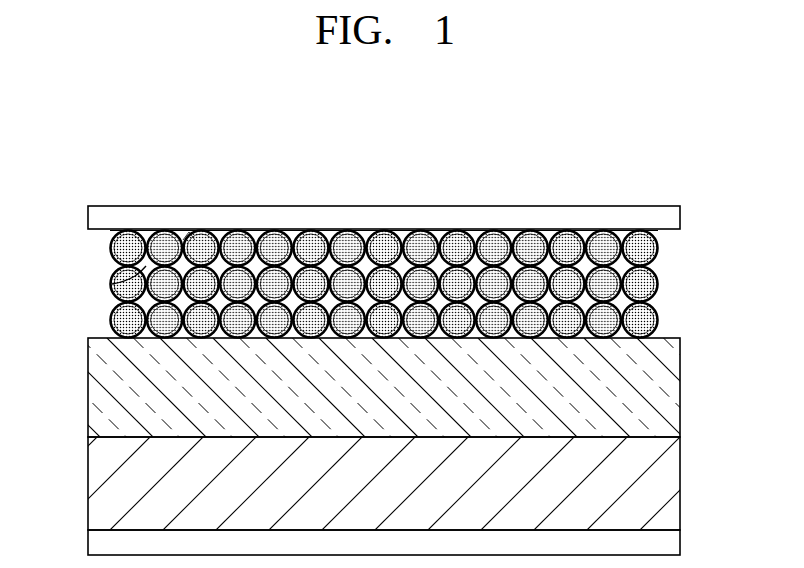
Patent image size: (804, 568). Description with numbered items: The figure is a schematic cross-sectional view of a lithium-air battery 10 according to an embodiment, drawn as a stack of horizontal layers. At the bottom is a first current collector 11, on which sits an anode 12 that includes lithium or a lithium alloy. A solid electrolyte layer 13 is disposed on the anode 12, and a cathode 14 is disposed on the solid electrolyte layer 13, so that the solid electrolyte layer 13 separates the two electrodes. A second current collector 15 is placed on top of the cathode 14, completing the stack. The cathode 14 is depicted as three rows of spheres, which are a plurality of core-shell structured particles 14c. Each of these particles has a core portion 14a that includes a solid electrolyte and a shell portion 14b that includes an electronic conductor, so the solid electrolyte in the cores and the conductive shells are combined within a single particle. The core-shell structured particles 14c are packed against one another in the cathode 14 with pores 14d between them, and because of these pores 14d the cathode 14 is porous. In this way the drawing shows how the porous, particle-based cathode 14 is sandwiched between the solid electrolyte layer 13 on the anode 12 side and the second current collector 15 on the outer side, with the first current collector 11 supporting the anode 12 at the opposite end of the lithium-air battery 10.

The lithium-air battery 10 is at (724, 158).
The first current collector 11 is at (668, 544).
The anode 12 is at (668, 484).
The solid electrolyte layer 13 is at (668, 387).
The cathode 14 is at (688, 231).
The core portion 14a is at (164, 240).
The shell portion 14b is at (189, 231).
The core-shell structured particles 14c is at (108, 233).
The pores 14d is at (118, 283).
The second current collector 15 is at (668, 216).